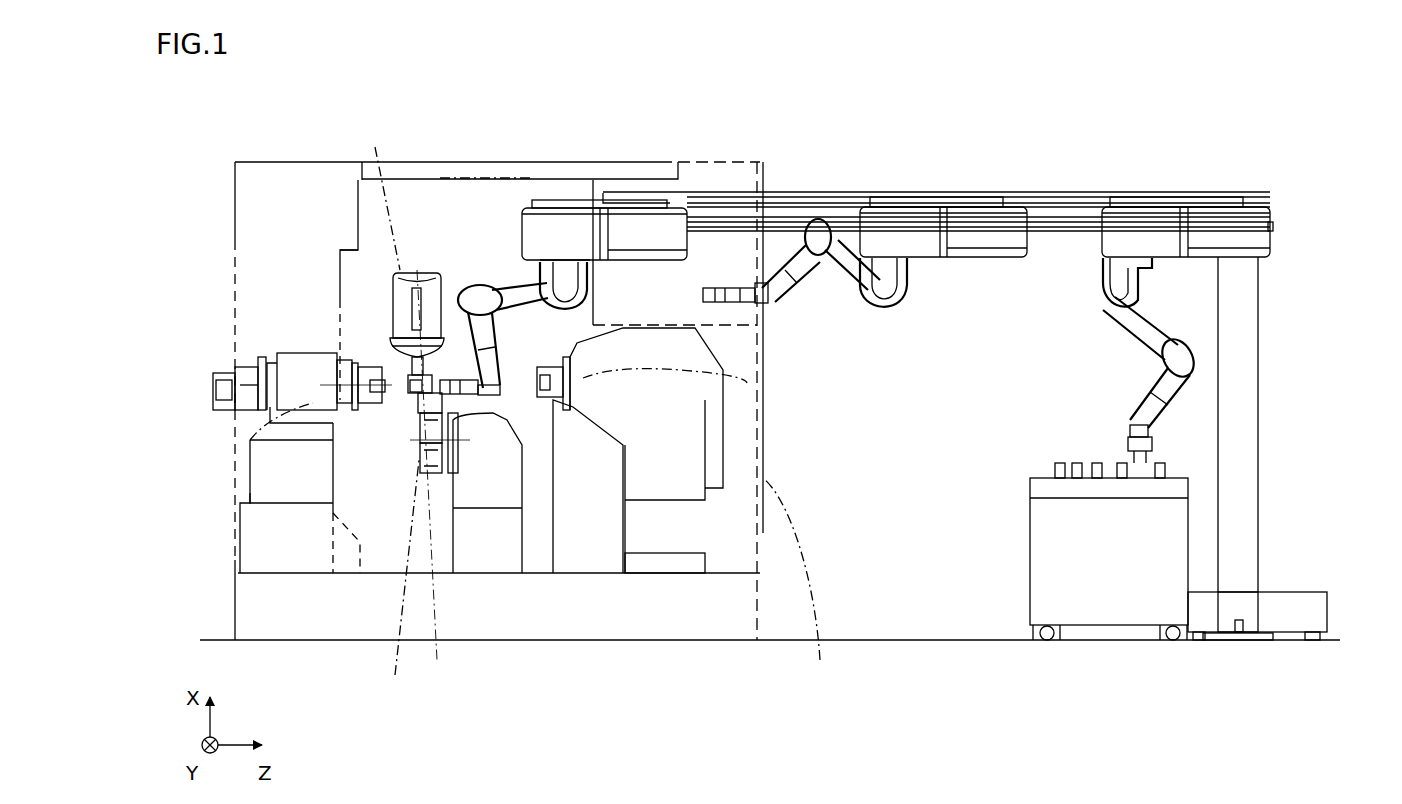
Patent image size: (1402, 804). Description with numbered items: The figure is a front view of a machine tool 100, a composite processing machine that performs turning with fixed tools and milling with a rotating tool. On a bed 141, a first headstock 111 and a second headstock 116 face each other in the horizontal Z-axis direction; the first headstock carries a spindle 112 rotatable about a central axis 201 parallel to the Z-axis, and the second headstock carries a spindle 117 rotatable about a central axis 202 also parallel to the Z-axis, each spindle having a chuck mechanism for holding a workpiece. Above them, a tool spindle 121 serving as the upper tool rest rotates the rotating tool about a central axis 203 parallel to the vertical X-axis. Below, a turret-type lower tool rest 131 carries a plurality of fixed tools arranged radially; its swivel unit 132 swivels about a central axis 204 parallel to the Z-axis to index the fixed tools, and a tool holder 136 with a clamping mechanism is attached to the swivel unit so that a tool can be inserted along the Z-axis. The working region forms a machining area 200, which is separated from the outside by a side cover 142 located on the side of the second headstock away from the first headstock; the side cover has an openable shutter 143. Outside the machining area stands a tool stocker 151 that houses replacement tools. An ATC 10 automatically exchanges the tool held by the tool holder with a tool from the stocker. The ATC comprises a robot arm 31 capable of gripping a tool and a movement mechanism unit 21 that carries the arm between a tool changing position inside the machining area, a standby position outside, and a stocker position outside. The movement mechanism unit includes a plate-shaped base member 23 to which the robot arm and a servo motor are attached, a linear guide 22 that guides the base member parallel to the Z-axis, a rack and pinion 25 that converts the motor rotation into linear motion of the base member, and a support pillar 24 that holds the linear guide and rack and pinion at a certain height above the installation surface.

The machine tool 100 is at (216, 138).
The ATC 10 is at (1229, 190).
The movement mechanism unit 21 is at (1001, 191).
The linear guide 22 is at (1057, 200).
The base member 23 is at (975, 197).
The support pillar 24 is at (1248, 312).
The rack and pinion 25 is at (1063, 232).
The robot arm 31 is at (511, 281).
The first headstock 111 is at (280, 352).
The spindle 112 is at (366, 362).
The second headstock 116 is at (597, 428).
The spindle 117 is at (552, 410).
The tool spindle 121 is at (386, 299).
The lower tool rest 131 is at (565, 262).
The swivel unit 132 is at (434, 473).
The tool holder 136 is at (410, 392).
The bed 141 is at (265, 612).
The side cover 142 is at (802, 586).
The shutter 143 is at (606, 186).
The tool stocker 151 is at (1179, 485).
The machining area 200 is at (435, 235).
The central axis 201 is at (250, 441).
The central axis 202 is at (757, 384).
The central axis 203 is at (397, 389).
The central axis 204 is at (396, 577).